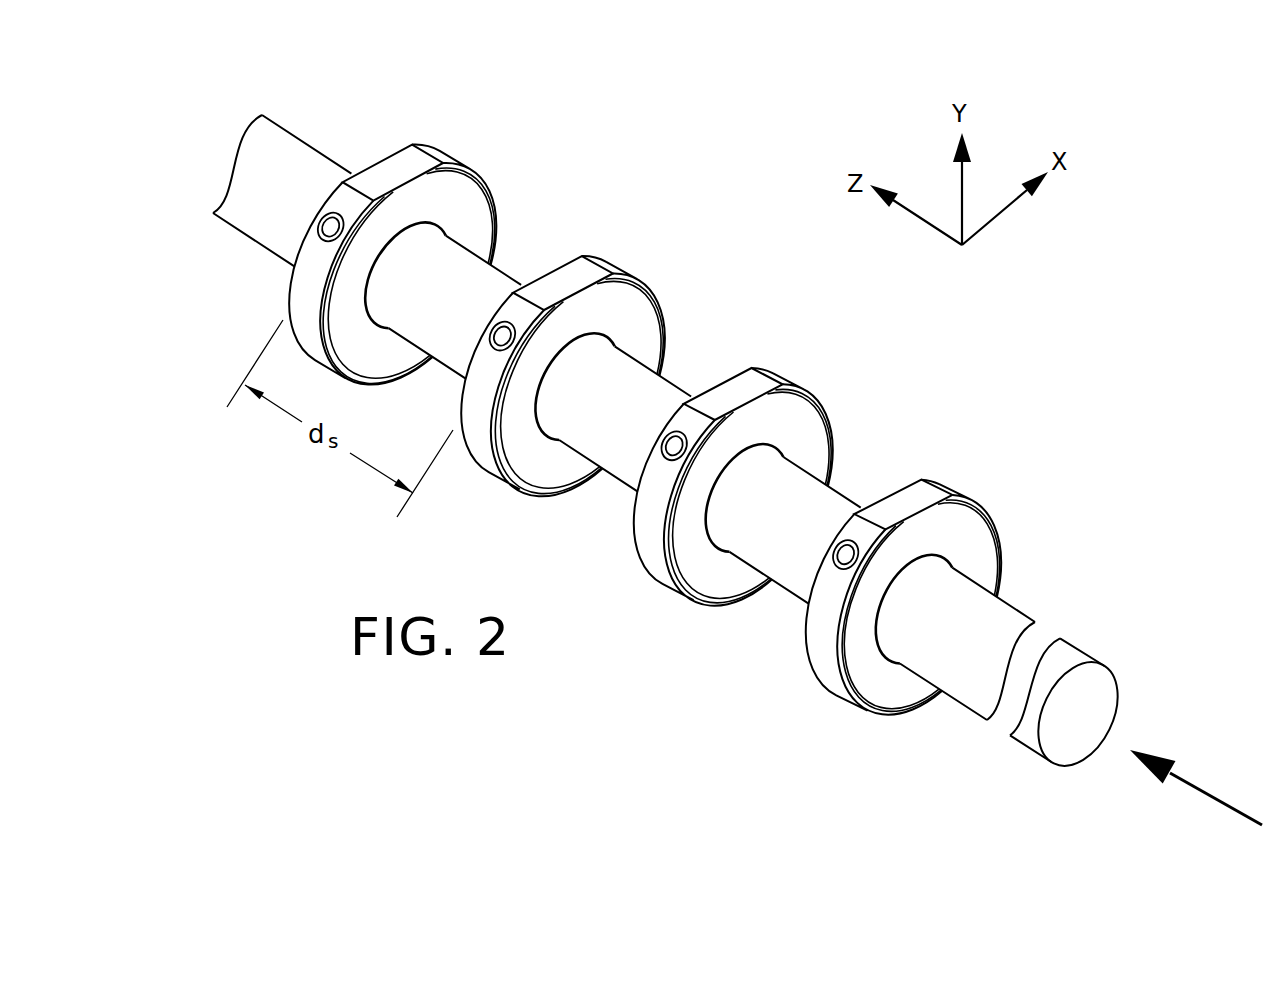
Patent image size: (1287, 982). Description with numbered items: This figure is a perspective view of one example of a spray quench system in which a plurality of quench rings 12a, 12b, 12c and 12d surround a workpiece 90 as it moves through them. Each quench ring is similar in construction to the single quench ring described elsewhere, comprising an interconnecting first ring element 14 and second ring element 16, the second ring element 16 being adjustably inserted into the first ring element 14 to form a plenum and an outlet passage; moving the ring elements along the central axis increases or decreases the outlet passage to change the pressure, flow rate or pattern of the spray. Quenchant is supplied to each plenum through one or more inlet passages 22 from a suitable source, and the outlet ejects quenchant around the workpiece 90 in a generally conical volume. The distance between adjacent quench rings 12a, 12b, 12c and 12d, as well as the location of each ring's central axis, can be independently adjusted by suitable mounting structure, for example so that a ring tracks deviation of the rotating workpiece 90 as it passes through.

The workpiece 90 is at (258, 153).
The quench ring 12a is at (975, 462).
The quench ring 12b is at (818, 352).
The quench ring 12c is at (637, 233).
The quench ring 12d is at (471, 117).
The first ring element 14 is at (392, 168).
The second ring element 16 is at (462, 195).
The inlet passage 22 is at (316, 228).